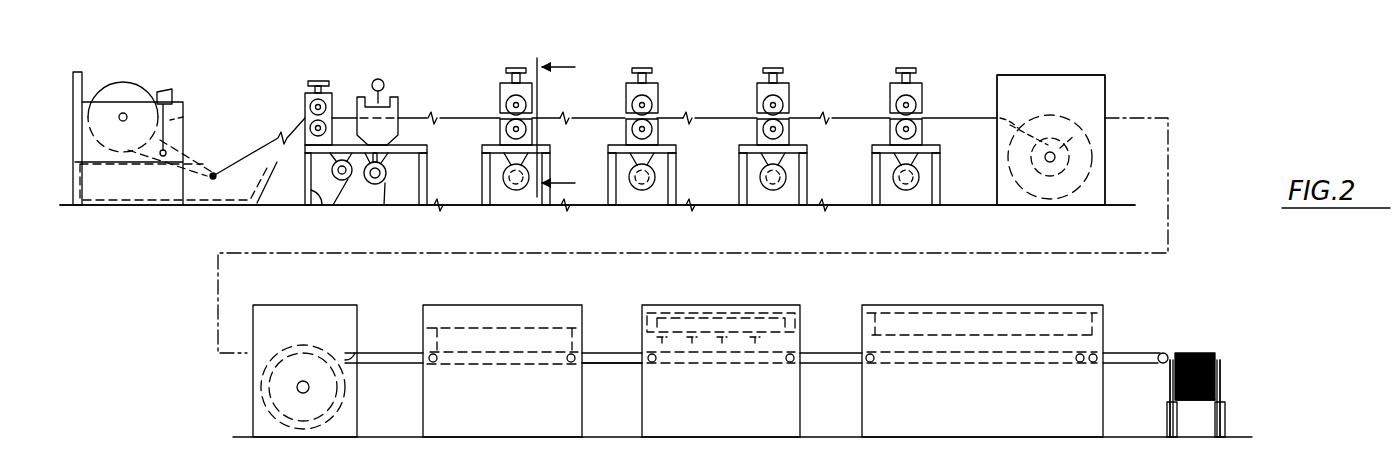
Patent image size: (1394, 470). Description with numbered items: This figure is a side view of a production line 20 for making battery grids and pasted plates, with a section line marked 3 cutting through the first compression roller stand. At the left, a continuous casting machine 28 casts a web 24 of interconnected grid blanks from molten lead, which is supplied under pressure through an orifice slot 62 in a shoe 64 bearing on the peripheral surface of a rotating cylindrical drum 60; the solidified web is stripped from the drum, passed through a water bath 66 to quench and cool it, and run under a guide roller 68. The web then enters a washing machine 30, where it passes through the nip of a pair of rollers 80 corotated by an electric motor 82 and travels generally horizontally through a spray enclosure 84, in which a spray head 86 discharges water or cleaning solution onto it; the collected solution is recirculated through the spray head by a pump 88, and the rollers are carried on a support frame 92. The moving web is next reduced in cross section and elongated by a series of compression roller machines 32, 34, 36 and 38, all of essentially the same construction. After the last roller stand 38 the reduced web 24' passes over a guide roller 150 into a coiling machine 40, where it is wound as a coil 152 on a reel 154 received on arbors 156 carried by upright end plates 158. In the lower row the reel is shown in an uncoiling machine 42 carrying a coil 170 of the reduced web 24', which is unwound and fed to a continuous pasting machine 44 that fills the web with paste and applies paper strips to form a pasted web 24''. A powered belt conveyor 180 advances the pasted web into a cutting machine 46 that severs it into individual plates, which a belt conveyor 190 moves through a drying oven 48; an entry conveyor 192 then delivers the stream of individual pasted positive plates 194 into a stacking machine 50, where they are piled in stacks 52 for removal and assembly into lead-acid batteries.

The section line 3- 3 is at (566, 130).
The production line 20 is at (797, 60).
The web 24 is at (605, 88).
The reduced web 24' is at (384, 319).
The pasted web 24'' is at (612, 324).
The continuous casting machine 28 is at (93, 66).
The washing machine 30 is at (380, 78).
The compression roller machine 32 is at (514, 66).
The compression roller machine 34 is at (661, 74).
The compression roller machine 36 is at (750, 60).
The compression roller machine 38 is at (907, 62).
The coiling machine 40 is at (1025, 63).
The uncoiling machine 42 is at (317, 299).
The continuous pasting machine 44 is at (493, 300).
The cutting machine 46 is at (709, 301).
The drying oven 48 is at (971, 301).
The stacking machine 50 is at (1188, 336).
The stacks 52 is at (1220, 378).
The rotating cylindrical drum 60 is at (125, 82).
The orifice slot 62 is at (187, 117).
The shoe 64 is at (172, 90).
The water bath 66 is at (125, 190).
The guide roller 68 is at (217, 173).
The rollers 80 is at (305, 103).
The electric motor 82 is at (346, 182).
The spray enclosure 84 is at (398, 110).
The spray head 86 is at (383, 82).
The pump 88 is at (388, 197).
The support frame 92 is at (316, 207).
The guide roller 150 is at (1003, 116).
The coil 152 is at (1080, 125).
The reel 154 is at (1067, 118).
The arbors 156 is at (270, 3).
The upright end plates 158 is at (1097, 75).
The coil 170 is at (262, 397).
The powered belt conveyor 180 is at (618, 365).
The belt conveyor 190 is at (820, 350).
The entry conveyor 192 is at (1130, 350).
The individual pasted positive plates 194 is at (1207, 353).